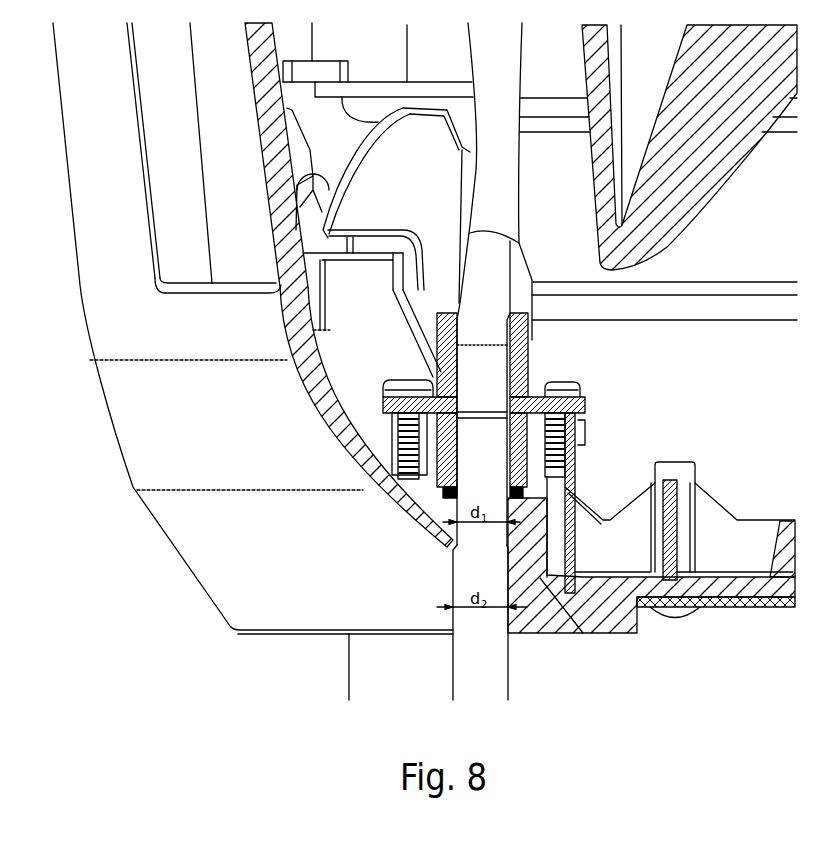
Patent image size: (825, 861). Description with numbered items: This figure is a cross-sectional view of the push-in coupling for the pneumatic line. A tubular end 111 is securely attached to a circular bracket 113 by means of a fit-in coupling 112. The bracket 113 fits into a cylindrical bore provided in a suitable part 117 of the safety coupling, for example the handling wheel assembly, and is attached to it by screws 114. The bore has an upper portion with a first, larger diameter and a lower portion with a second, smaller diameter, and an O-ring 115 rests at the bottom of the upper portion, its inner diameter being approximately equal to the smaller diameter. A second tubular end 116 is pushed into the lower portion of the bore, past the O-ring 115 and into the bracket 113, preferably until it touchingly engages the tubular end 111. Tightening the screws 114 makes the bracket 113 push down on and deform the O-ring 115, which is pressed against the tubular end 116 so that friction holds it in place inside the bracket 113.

The tubular end 111 is at (485, 290).
The fit-in coupling 112 is at (530, 348).
The circular bracket 113 is at (410, 377).
The screws 114 is at (582, 412).
The O-ring 115 is at (443, 493).
The tubular end 116 is at (480, 618).
The part of the safety coupling 117 is at (600, 607).